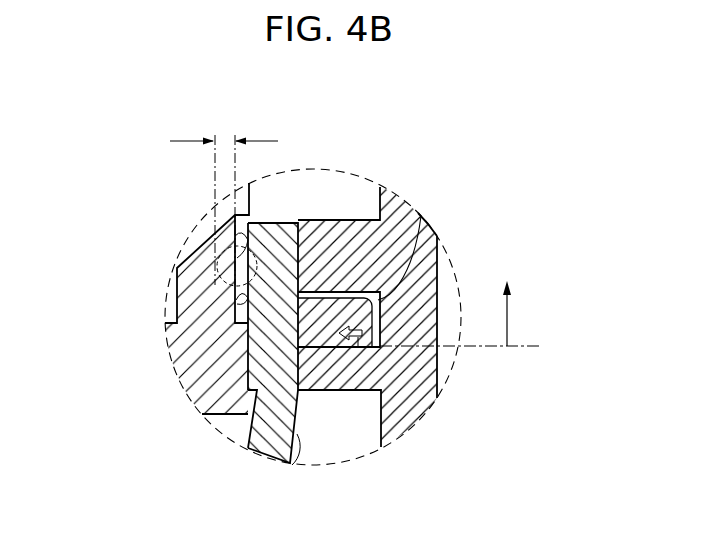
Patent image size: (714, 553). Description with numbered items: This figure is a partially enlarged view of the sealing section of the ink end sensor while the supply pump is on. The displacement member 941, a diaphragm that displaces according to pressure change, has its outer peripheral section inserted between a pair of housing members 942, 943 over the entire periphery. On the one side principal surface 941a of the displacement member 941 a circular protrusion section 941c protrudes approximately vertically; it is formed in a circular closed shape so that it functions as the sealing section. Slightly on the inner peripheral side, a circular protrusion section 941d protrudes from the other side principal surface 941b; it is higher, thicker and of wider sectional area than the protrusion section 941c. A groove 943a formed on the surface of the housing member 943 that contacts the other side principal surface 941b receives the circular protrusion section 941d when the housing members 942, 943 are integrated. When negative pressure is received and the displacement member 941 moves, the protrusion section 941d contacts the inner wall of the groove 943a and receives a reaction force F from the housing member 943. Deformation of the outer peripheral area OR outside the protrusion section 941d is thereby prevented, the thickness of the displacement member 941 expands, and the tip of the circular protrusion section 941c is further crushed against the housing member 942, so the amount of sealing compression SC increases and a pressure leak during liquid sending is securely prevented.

The displacement member 941 is at (293, 214).
The one side principal surface 941a is at (247, 437).
The other side principal surface 941b is at (292, 465).
The circular protrusion section 941c is at (240, 237).
The circular protrusion section 941d is at (326, 340).
The housing member 942 is at (180, 365).
The housing member 943 is at (408, 410).
The groove 943a is at (421, 216).
The reaction force F is at (366, 334).
The outer peripheral area OR is at (509, 301).
The amount of sealing compression SC is at (224, 198).